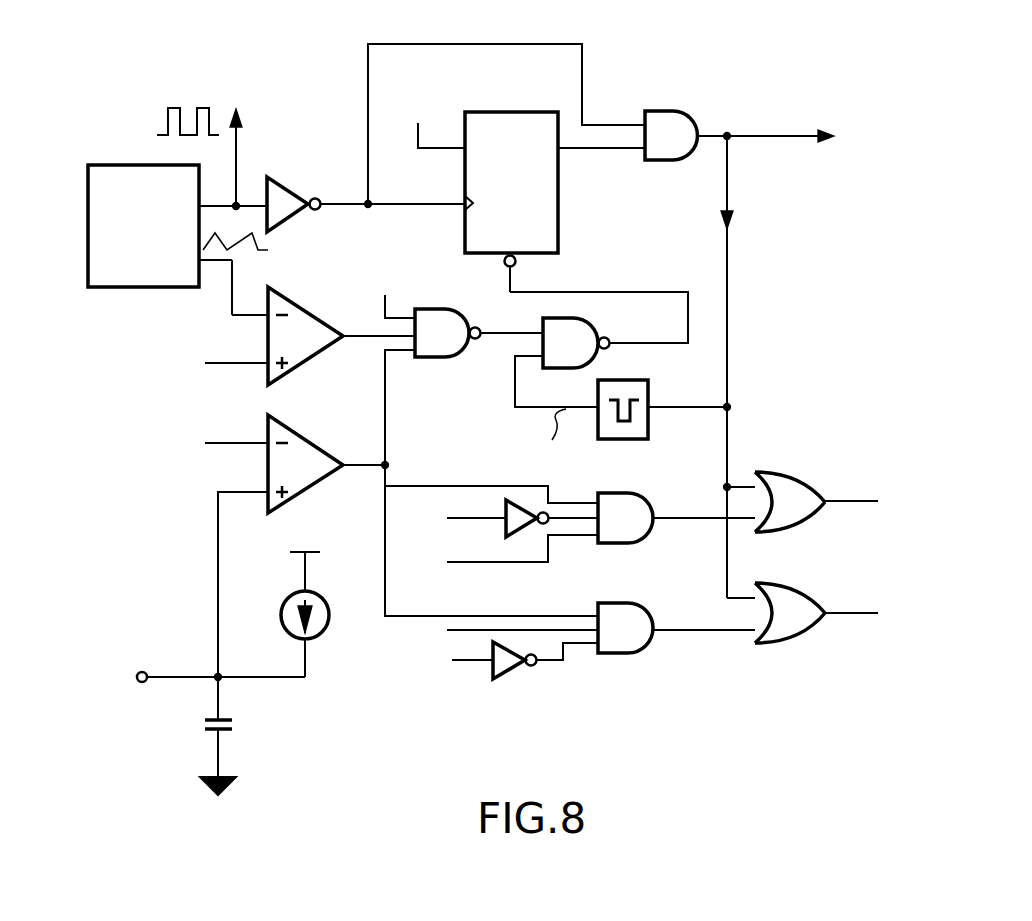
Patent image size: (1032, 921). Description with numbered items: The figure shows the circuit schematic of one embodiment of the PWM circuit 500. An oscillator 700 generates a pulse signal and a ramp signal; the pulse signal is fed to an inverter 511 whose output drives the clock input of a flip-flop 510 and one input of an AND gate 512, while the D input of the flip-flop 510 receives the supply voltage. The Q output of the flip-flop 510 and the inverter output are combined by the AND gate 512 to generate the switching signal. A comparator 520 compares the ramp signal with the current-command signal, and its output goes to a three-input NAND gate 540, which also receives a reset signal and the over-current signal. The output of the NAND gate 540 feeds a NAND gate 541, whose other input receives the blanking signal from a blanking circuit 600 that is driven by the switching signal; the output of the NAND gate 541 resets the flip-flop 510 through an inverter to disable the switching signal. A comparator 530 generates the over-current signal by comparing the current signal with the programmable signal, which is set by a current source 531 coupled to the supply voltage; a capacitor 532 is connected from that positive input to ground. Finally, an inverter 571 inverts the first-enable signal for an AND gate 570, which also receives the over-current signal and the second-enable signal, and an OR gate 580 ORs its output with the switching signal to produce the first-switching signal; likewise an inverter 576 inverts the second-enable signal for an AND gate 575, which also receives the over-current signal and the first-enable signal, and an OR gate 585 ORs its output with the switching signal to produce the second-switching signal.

The PWM circuit 500 is at (862, 43).
The oscillator 700 is at (86, 182).
The flip-flop 510 is at (505, 111).
The inverter 511 is at (278, 183).
The AND gate 512 is at (662, 110).
The comparator 520 is at (297, 296).
The comparator 530 is at (298, 426).
The current source 531 is at (330, 625).
The capacitor 532 is at (235, 722).
The NAND gate 540 is at (420, 307).
The NAND gate 541 is at (565, 318).
The blanking circuit 600 is at (648, 380).
The AND gate 570 is at (624, 492).
The inverter 571 is at (506, 532).
The AND gate 575 is at (630, 604).
The inverter 576 is at (511, 676).
The OR gate 580 is at (822, 520).
The OR gate 585 is at (822, 632).